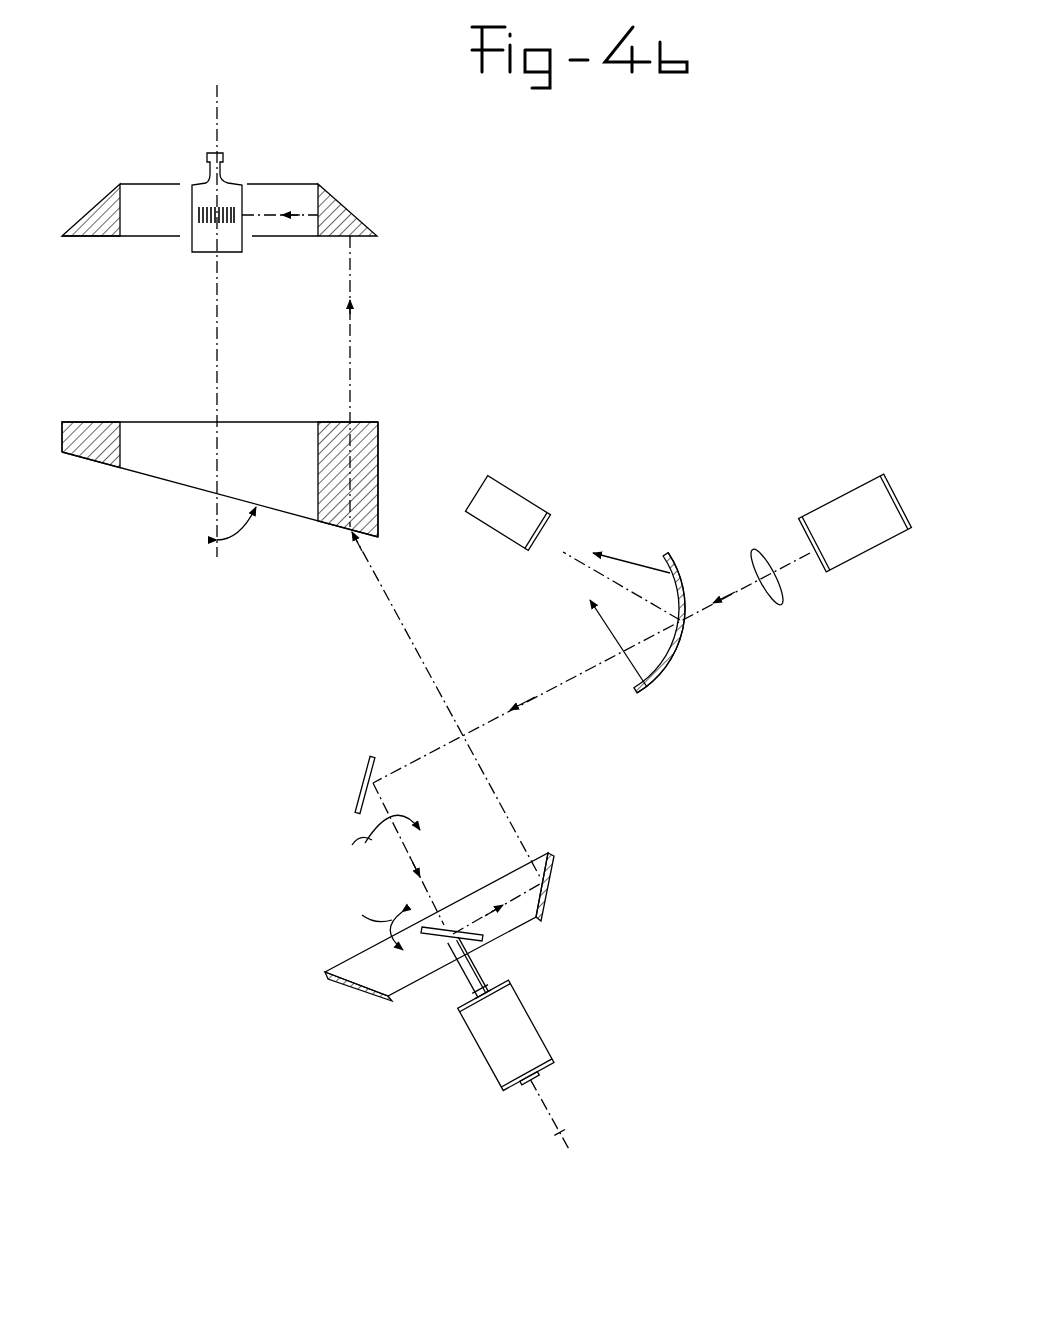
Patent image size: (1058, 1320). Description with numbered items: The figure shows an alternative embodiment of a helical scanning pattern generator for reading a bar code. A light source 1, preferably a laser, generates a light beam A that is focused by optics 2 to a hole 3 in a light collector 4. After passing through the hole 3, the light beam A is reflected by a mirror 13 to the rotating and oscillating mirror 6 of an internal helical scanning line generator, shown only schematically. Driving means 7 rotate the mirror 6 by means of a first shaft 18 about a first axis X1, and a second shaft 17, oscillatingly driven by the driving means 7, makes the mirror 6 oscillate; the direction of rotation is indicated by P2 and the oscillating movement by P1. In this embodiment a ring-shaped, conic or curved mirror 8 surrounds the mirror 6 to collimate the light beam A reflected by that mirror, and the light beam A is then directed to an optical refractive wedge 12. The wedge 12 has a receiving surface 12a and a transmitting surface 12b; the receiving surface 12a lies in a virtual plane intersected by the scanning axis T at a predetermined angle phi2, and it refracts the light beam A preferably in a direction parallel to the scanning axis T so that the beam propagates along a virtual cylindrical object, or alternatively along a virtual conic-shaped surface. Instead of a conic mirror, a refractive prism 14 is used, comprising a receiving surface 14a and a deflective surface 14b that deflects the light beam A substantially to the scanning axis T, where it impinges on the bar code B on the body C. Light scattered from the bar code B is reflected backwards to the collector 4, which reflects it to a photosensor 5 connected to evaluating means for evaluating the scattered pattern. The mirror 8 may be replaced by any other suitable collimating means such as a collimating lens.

The light source 1 is at (845, 505).
The optics 2 is at (762, 553).
The hole 3 is at (682, 632).
The light collector 4 is at (657, 682).
The photosensor 5 is at (513, 498).
The mirror 6 is at (440, 928).
The driving means 7 is at (530, 1037).
The ring-shaped, conic or curved mirror 8 is at (548, 877).
The optical refractive wedge 12 is at (400, 475).
The receiving surface 12a is at (343, 527).
The transmitting surface 12b is at (362, 420).
The mirror 13 is at (368, 775).
The refractive prism 14 is at (358, 192).
The receiving surface 14a is at (92, 237).
The deflective surface 14b is at (93, 205).
The second shaft 17 is at (482, 957).
The first shaft 18 is at (475, 975).
The light beam A is at (513, 705).
The bar code B is at (228, 207).
The body C is at (197, 242).
The scanning axis T is at (227, 321).
The oscillating movement P1 is at (365, 923).
The direction of rotation P2 is at (367, 837).
The first axis X1 is at (559, 1115).
The predetermined angle phi2 is at (247, 530).